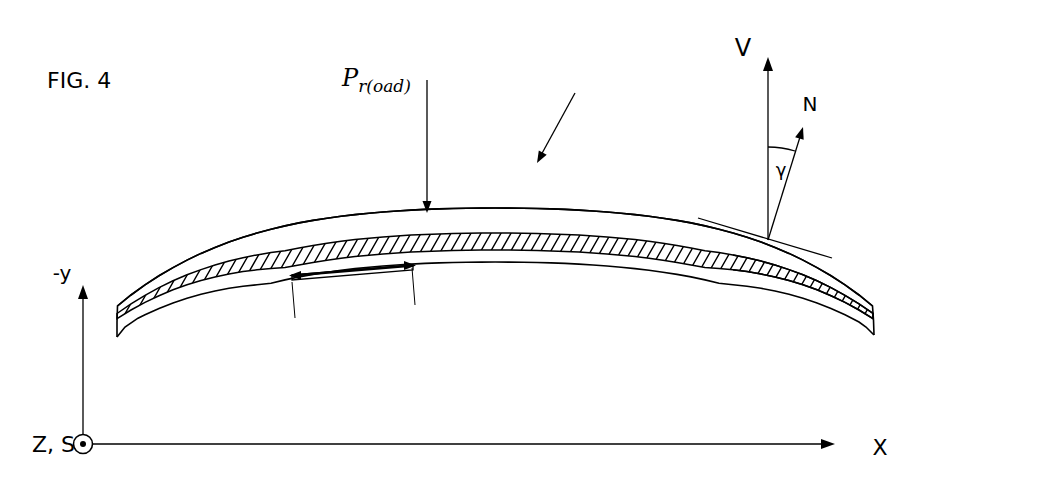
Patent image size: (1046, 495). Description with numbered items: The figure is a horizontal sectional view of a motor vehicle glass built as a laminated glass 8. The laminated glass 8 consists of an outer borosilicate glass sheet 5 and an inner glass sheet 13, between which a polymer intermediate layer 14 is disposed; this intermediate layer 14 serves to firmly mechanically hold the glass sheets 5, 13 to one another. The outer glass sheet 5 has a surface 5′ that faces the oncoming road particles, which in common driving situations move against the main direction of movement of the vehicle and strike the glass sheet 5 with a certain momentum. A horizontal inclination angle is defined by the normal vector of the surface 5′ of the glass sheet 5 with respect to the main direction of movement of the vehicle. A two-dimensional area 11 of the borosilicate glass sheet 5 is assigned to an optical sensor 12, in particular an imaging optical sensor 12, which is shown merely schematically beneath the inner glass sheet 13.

The glass sheet 5 is at (495, 244).
The surface of glass sheet 5′ is at (612, 207).
The laminated glass 8 is at (562, 104).
The two-dimensional area 11 is at (525, 245).
The optical sensor 12 is at (332, 291).
The inner glass sheet 13 is at (495, 307).
The polymer intermediate layer 14 is at (762, 272).